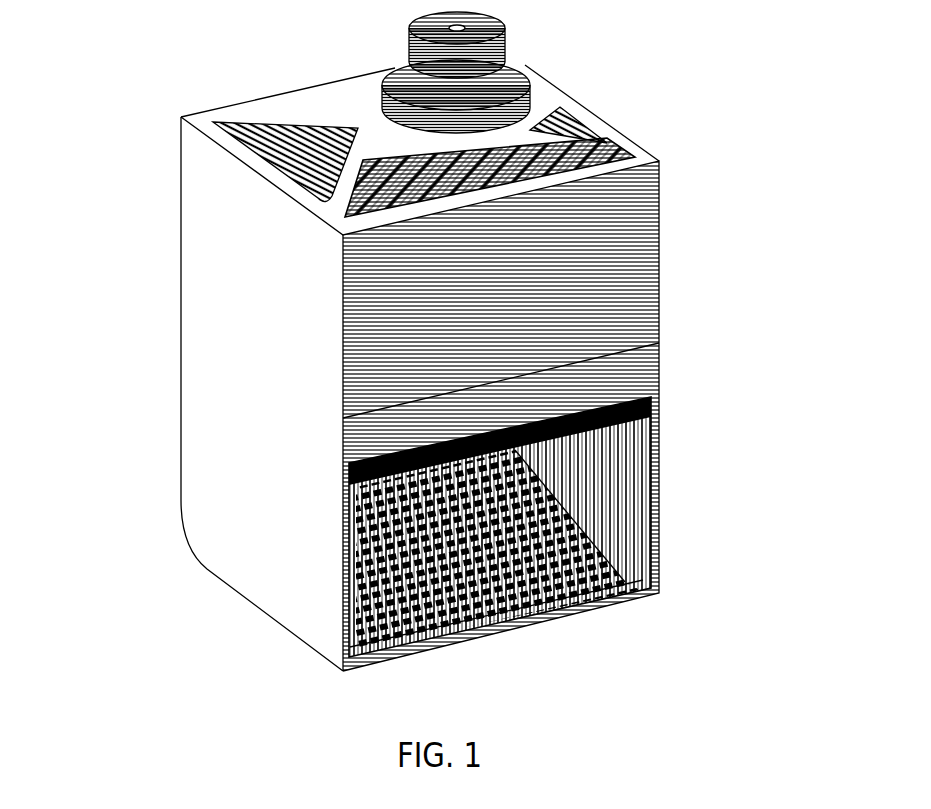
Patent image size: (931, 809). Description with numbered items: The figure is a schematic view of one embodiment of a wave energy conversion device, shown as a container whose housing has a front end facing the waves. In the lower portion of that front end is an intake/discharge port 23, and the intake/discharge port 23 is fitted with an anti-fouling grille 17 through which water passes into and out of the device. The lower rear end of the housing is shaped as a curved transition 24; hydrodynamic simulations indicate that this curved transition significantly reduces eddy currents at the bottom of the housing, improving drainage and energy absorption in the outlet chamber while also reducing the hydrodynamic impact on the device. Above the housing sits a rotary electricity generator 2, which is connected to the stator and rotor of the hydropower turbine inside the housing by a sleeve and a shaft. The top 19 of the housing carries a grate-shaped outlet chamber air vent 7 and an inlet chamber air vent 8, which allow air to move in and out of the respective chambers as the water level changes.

The rotary electricity generator 2 is at (520, 62).
The top 19 is at (373, 103).
The outlet chamber air vent 7 is at (590, 127).
The inlet chamber air vent 8 is at (632, 156).
The anti-fouling grille 17 is at (580, 503).
The intake/discharge port 23 is at (560, 597).
The curved transition 24 is at (190, 557).